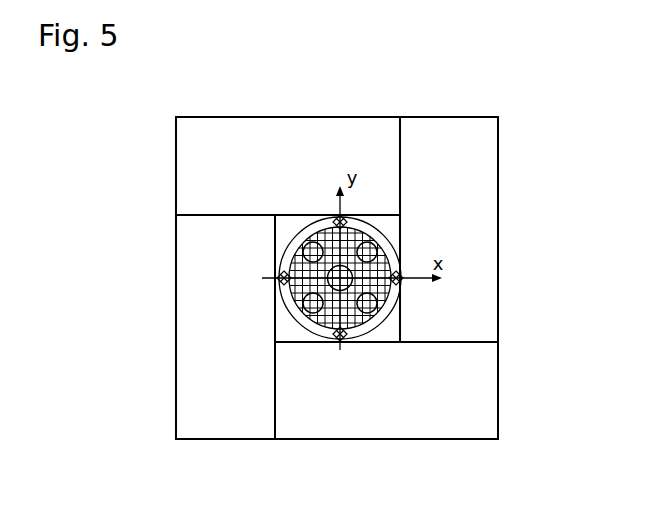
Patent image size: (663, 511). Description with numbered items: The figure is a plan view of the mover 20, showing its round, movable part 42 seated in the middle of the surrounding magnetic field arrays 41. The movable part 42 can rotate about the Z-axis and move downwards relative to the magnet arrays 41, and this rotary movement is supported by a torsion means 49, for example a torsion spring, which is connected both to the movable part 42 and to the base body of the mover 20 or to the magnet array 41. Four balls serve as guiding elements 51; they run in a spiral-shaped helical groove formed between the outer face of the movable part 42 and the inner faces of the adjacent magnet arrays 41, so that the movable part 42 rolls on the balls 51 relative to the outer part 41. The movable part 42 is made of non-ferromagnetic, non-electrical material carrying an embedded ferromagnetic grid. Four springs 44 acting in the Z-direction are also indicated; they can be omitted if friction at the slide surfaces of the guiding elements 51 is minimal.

The mover 20 is at (516, 112).
The magnetic field array 41 is at (185, 132).
The movable part 42 is at (292, 226).
The spring 44 is at (305, 245).
The torsion means 49 is at (350, 265).
The guiding element 51 is at (336, 216).